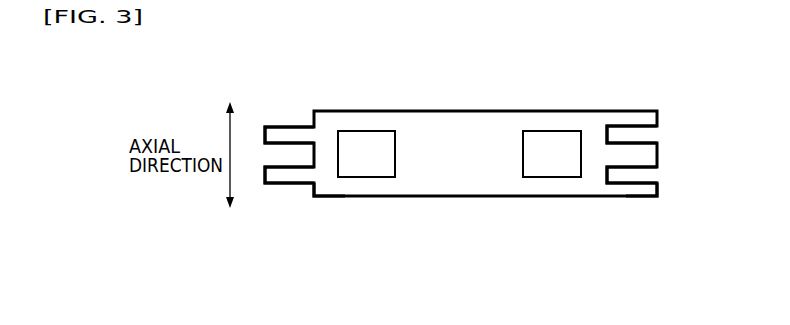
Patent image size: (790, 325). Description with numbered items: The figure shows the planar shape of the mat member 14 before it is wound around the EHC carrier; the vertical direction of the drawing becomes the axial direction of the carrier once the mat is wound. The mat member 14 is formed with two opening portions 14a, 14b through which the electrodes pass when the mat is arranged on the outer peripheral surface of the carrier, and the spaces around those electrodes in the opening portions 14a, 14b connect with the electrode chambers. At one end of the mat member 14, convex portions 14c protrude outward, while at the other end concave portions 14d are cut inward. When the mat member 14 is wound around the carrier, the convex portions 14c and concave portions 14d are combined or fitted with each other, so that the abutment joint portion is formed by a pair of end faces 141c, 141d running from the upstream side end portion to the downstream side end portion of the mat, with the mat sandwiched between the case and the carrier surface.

The mat member 14 is at (545, 120).
The opening portion 14a is at (372, 162).
The opening portion 14b is at (552, 162).
The convex portions 14c is at (293, 133).
The concave portions 14d is at (641, 130).
The end face 141c is at (313, 188).
The end face 141d is at (658, 191).